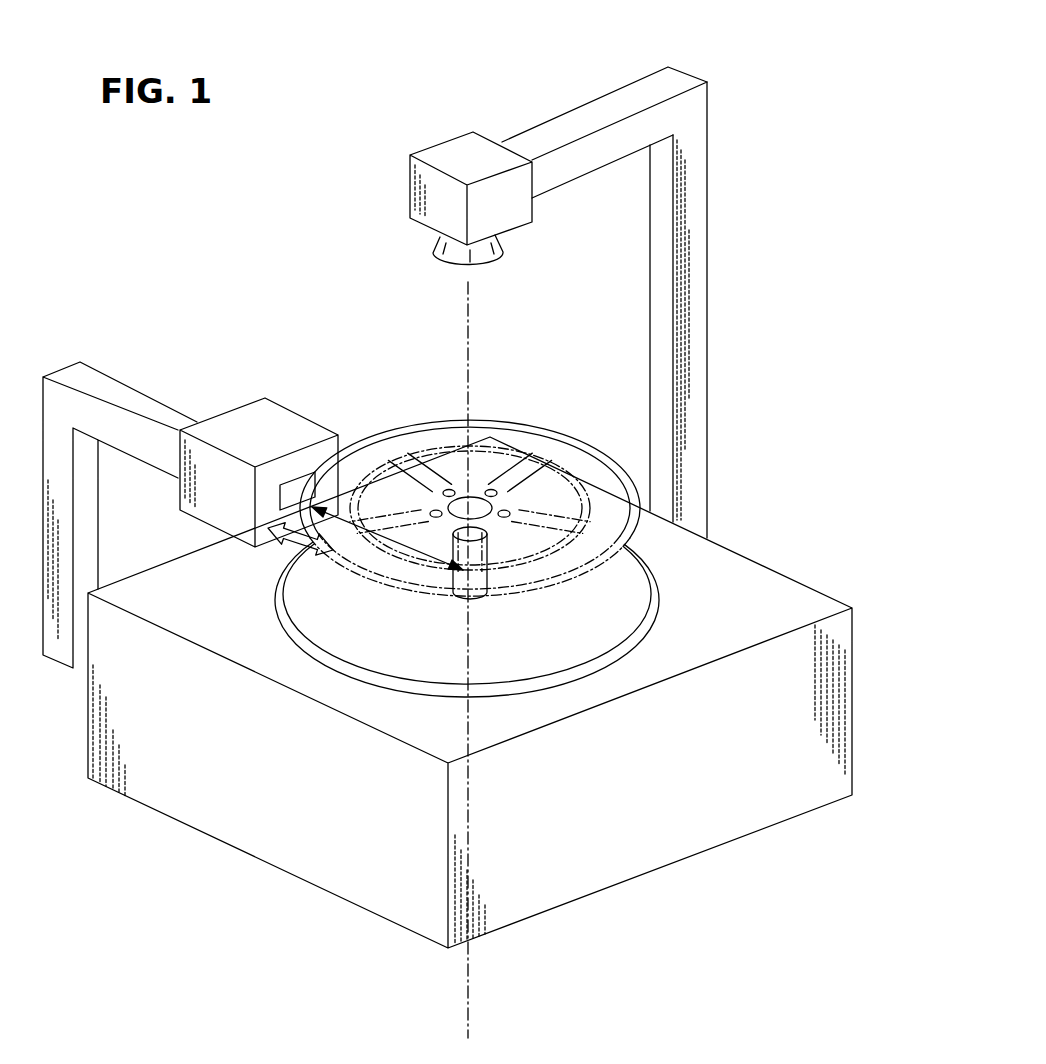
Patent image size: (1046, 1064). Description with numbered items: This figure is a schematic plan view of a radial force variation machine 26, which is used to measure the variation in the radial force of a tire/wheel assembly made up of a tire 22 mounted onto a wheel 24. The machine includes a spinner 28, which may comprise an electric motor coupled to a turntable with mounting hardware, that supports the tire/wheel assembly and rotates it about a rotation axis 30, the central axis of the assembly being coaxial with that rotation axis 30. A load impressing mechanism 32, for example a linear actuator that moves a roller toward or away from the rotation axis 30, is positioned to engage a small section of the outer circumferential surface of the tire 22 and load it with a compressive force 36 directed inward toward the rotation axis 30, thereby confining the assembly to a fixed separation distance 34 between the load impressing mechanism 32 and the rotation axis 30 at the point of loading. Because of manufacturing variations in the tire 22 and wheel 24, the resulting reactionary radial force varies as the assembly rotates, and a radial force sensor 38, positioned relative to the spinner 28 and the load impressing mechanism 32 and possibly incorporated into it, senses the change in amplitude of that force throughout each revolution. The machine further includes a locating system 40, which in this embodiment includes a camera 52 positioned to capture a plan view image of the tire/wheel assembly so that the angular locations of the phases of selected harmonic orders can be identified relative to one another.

The tire 22 is at (372, 630).
The wheel 24 is at (525, 470).
The radial force variation machine 26 is at (745, 145).
The spinner 28 is at (627, 652).
The rotation axis 30 is at (468, 993).
The load impressing mechanism 32 is at (246, 428).
The fixed separation distance 34 is at (398, 545).
The compressive force 36 is at (266, 530).
The radial force sensor 38 is at (293, 492).
The locating system 40 is at (577, 113).
The camera 52 is at (428, 195).